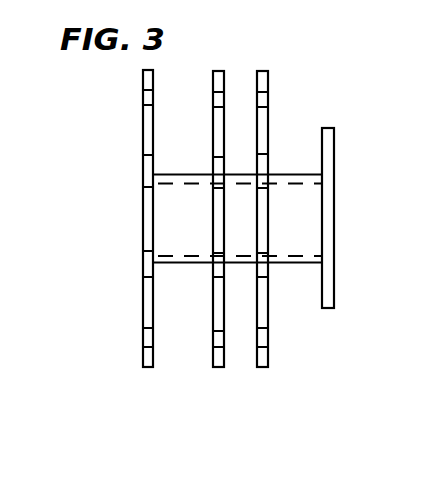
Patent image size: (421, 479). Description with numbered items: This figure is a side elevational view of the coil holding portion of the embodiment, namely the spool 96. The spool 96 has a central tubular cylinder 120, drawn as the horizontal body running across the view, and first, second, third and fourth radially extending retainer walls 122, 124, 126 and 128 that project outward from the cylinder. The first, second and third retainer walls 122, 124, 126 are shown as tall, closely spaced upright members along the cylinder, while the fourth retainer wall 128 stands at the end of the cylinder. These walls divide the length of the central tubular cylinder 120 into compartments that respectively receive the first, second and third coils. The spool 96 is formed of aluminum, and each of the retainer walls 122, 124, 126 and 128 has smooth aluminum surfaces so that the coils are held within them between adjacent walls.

The spool 96 is at (262, 50).
The central tubular cylinder 120 is at (169, 232).
The first radially extending retainer wall 122 is at (143, 329).
The second radially extending retainer wall 124 is at (213, 337).
The third radially extending retainer wall 126 is at (265, 355).
The fourth radially extending retainer wall 128 is at (322, 298).